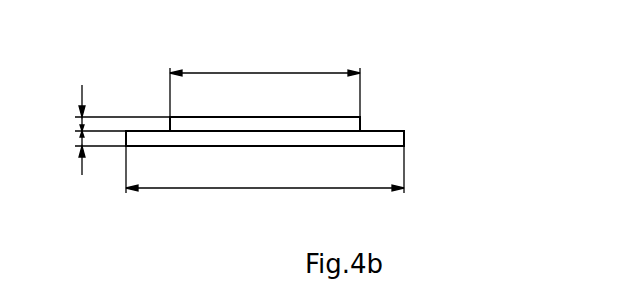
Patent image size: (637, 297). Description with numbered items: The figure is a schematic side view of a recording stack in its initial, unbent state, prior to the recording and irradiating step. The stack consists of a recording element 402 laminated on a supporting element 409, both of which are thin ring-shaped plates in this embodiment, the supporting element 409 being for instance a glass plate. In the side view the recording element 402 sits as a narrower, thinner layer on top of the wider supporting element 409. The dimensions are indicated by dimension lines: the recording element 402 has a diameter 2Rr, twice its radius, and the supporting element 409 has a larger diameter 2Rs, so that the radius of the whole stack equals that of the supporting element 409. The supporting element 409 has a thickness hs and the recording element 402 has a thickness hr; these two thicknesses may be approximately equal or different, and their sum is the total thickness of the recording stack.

The recording element 402 is at (362, 121).
The supporting element 409 is at (405, 141).
The diameter of the recording element 2Rr is at (265, 82).
The diameter of the supporting element 2Rs is at (265, 169).
The thickness of the recording element hr is at (112, 107).
The thickness of the supporting element hs is at (90, 156).